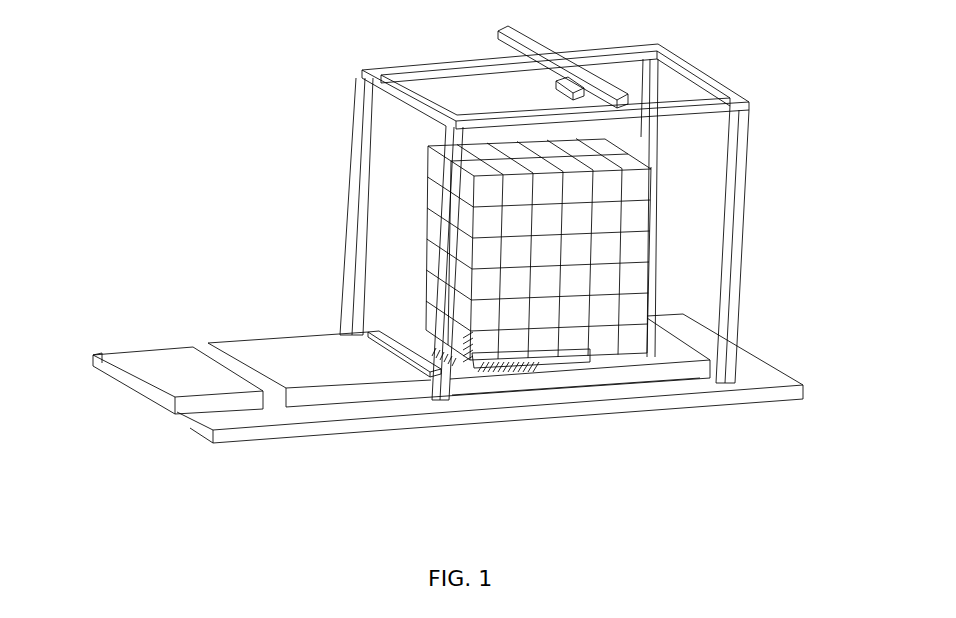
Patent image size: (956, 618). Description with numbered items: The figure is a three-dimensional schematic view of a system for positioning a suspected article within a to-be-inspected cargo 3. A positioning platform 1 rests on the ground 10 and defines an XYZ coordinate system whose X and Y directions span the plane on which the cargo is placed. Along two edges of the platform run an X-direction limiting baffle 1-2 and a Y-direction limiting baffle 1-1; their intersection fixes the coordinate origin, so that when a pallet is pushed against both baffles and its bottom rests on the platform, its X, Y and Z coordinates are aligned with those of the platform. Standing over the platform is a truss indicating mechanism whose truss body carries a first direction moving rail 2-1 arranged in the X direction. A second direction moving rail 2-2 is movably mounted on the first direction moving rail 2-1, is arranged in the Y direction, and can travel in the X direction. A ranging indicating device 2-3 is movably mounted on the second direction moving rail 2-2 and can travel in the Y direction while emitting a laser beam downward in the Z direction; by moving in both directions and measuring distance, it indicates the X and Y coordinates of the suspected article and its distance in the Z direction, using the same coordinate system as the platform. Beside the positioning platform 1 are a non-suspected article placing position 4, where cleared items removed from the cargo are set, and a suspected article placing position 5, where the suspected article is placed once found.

The positioning platform 1 is at (638, 377).
The Y-direction limiting baffle 1-1 is at (403, 325).
The X-direction limiting baffle 1-2 is at (555, 365).
The first direction moving rail 2-1 is at (702, 105).
The second direction moving rail 2-2 is at (575, 80).
The ranging indicating device 2-3 is at (560, 84).
The to-be-inspected cargo 3 is at (362, 236).
The non-suspected article placing position 4 is at (290, 370).
The suspected article placing position 5 is at (160, 368).
The ground 10 is at (222, 433).